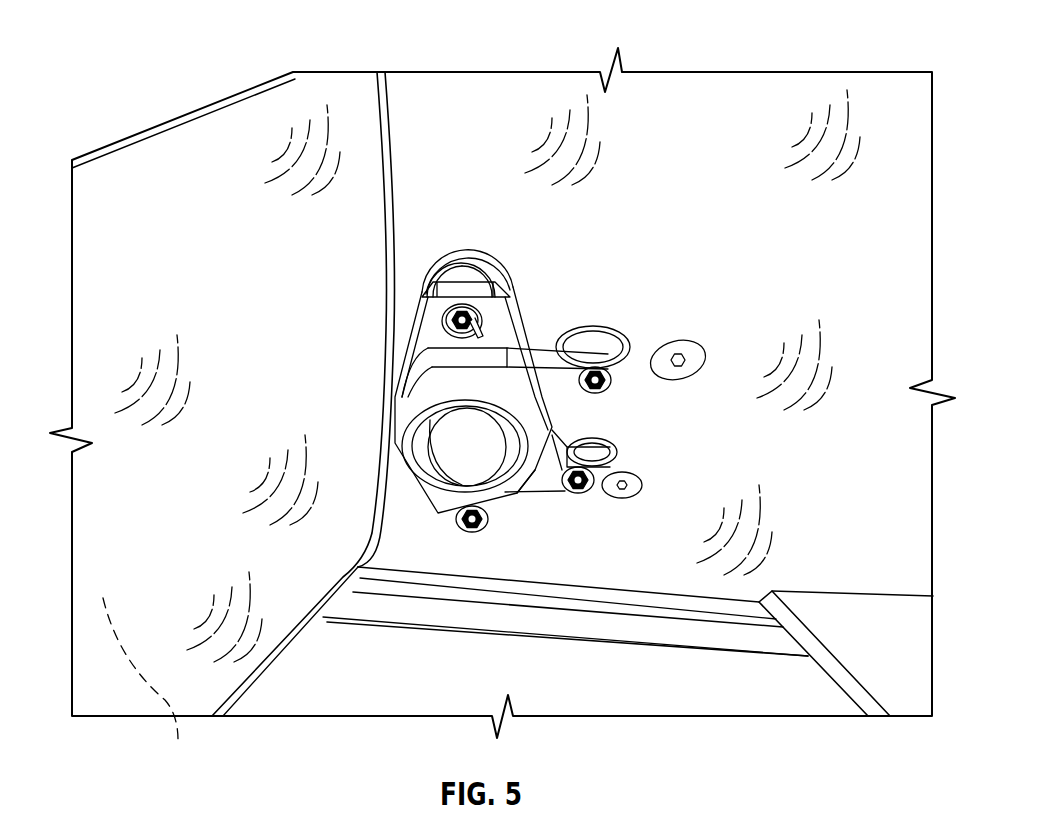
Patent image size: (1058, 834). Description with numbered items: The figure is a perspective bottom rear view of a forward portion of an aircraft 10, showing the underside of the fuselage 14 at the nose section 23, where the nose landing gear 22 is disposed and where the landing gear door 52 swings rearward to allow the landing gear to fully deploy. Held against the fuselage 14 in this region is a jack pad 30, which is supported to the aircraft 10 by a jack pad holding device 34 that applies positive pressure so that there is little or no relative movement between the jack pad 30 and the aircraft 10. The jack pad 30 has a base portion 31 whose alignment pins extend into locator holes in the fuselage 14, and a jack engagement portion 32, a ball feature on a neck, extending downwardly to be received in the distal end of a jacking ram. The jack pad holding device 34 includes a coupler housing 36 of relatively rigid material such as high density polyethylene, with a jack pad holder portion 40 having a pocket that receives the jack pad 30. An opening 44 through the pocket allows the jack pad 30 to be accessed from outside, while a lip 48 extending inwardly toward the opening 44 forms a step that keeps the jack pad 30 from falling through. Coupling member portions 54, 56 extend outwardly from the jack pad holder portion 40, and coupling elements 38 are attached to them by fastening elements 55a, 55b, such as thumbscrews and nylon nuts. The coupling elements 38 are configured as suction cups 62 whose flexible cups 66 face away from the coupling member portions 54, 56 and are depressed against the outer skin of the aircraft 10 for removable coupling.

The aircraft 10 is at (882, 86).
The fuselage 14 is at (413, 183).
The nose landing gear 22 is at (518, 674).
The nose section 23 is at (435, 135).
The jack pad 30 is at (418, 480).
The base portion 31 is at (515, 510).
The jack engagement portion 32 is at (438, 513).
The jack pad holding device 34 is at (530, 503).
The coupler housing 36 is at (503, 388).
The coupling elements 38 is at (470, 273).
The jack pad holder portion 40 is at (430, 367).
The opening 44 is at (420, 437).
The lip 48 is at (567, 432).
The landing gear door 52 is at (365, 460).
The coupling member portion 54 is at (428, 310).
The fastening element 55a is at (513, 285).
The fastening element 55b is at (462, 310).
The coupling member portion 56 is at (628, 338).
The suction cups 62 is at (438, 268).
The cups 66 is at (580, 340).